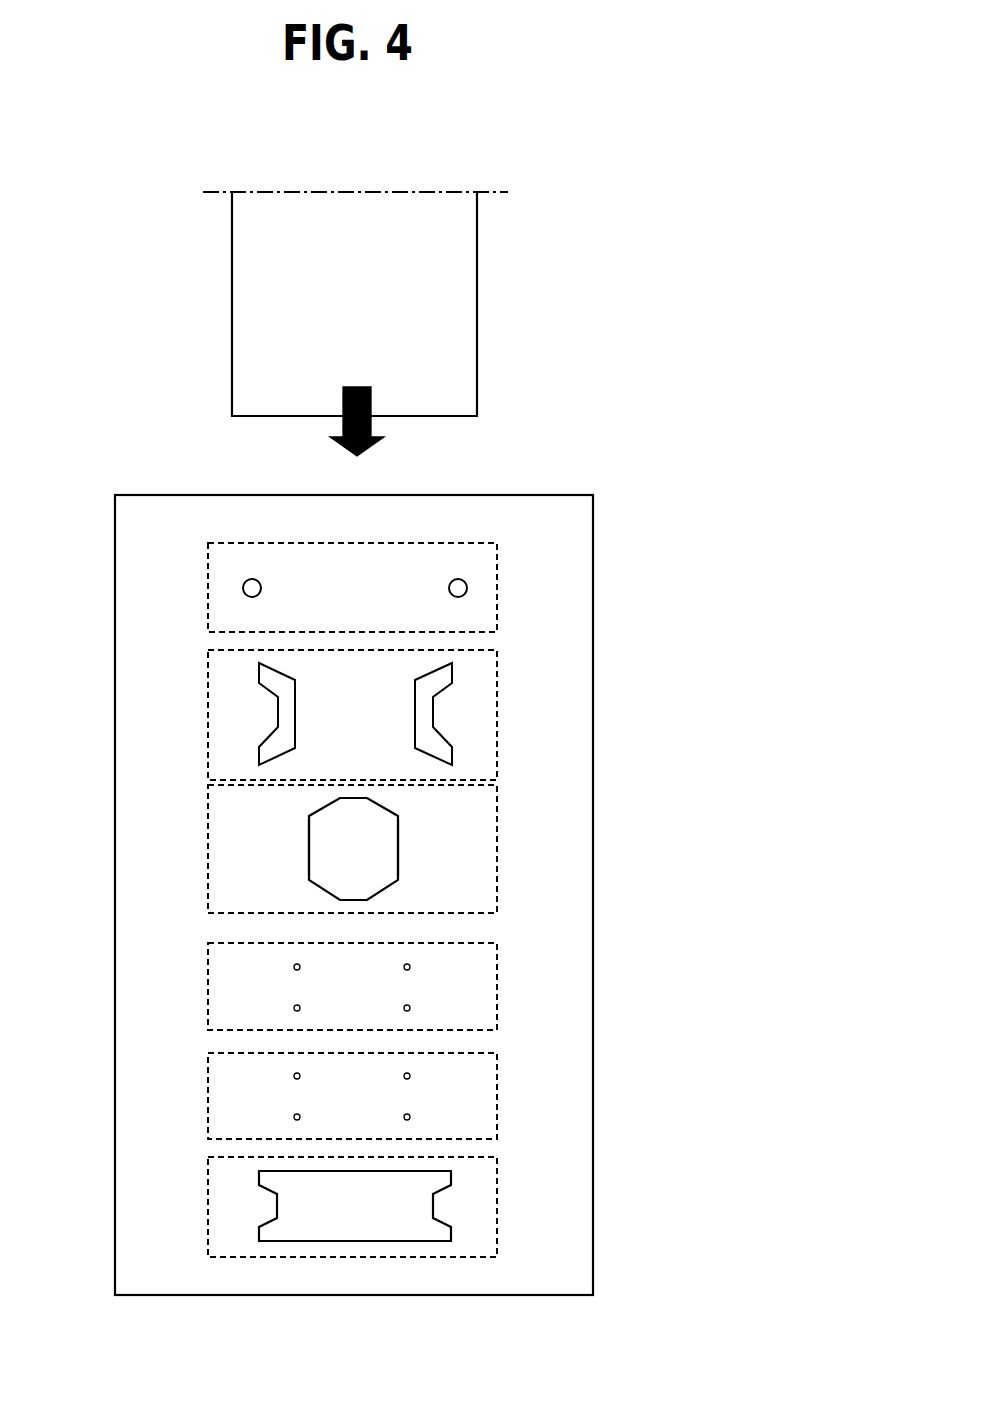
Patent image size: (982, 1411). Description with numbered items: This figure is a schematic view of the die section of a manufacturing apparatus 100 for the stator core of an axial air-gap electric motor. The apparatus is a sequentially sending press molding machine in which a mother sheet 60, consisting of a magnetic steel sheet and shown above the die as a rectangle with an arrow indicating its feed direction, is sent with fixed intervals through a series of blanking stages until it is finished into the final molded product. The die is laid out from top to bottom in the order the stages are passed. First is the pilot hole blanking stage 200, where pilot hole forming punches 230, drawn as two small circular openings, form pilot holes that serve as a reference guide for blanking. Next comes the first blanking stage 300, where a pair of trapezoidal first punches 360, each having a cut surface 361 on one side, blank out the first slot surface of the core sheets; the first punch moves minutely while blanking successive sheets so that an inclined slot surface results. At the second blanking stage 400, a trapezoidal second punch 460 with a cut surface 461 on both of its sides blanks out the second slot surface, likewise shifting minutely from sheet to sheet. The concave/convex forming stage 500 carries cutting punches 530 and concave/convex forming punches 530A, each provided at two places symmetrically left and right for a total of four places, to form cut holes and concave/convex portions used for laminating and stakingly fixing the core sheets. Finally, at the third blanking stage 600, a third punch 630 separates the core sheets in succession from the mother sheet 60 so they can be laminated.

The mother sheet 60 is at (477, 306).
The manufacturing apparatus 100 is at (735, 816).
The pilot hole blanking stage 200 is at (552, 612).
The pilot hole forming punches 230 is at (243, 583).
The first blanking stage 300 is at (552, 724).
The first punch 360 is at (278, 710).
The cut surface 361 is at (297, 700).
The second blanking stage 400 is at (568, 852).
The second punch 460 is at (282, 872).
The cut surface 461 is at (309, 832).
The concave/convex forming stage 500 is at (552, 1033).
The cutting punches 530 is at (294, 969).
The concave/convex forming punches 530A is at (294, 1077).
The third blanking stage 600 is at (552, 1203).
The third punch 630 is at (275, 1186).